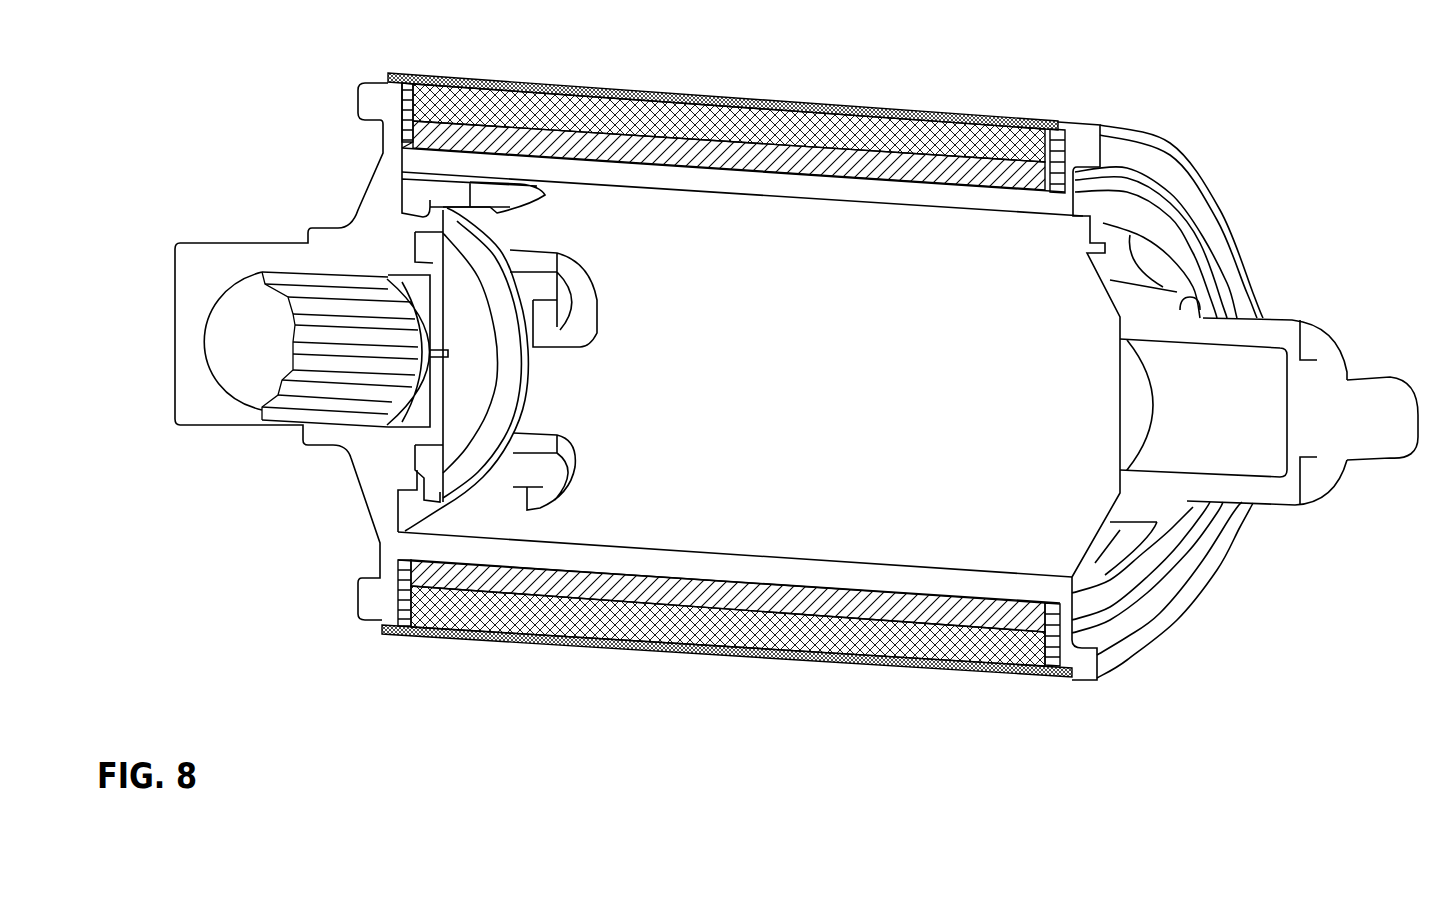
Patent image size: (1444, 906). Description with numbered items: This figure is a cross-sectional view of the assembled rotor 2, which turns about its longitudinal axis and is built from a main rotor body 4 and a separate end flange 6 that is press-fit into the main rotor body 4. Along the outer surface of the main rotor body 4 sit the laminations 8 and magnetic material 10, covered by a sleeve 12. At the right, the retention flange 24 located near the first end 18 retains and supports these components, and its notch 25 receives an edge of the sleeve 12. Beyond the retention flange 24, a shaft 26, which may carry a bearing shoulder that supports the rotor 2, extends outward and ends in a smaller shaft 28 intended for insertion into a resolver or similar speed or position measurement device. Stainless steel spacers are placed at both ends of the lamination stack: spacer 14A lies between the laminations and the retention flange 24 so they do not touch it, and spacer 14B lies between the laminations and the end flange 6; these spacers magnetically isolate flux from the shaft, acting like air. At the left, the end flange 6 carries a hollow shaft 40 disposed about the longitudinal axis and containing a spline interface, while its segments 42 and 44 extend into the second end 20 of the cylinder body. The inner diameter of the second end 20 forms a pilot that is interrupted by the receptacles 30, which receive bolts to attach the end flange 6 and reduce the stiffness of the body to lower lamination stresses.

The rotor 2 is at (1296, 90).
The main rotor body 4 is at (1228, 235).
The end flange 6 is at (358, 212).
The laminations 8 is at (755, 148).
The magnetic material 10 is at (657, 102).
The sleeve 12 is at (540, 82).
The spacer 14A is at (1062, 678).
The spacer 14B is at (402, 78).
The first end 18 is at (1016, 393).
The second end 20 is at (600, 391).
The retention flange 24 is at (1095, 128).
The notch 25 is at (1078, 112).
The shaft 26 is at (1265, 325).
The shaft 28 is at (1372, 383).
The receptacles 30 is at (495, 213).
The shaft 40 is at (222, 243).
The segment 42 is at (410, 228).
The segment 44 is at (423, 490).